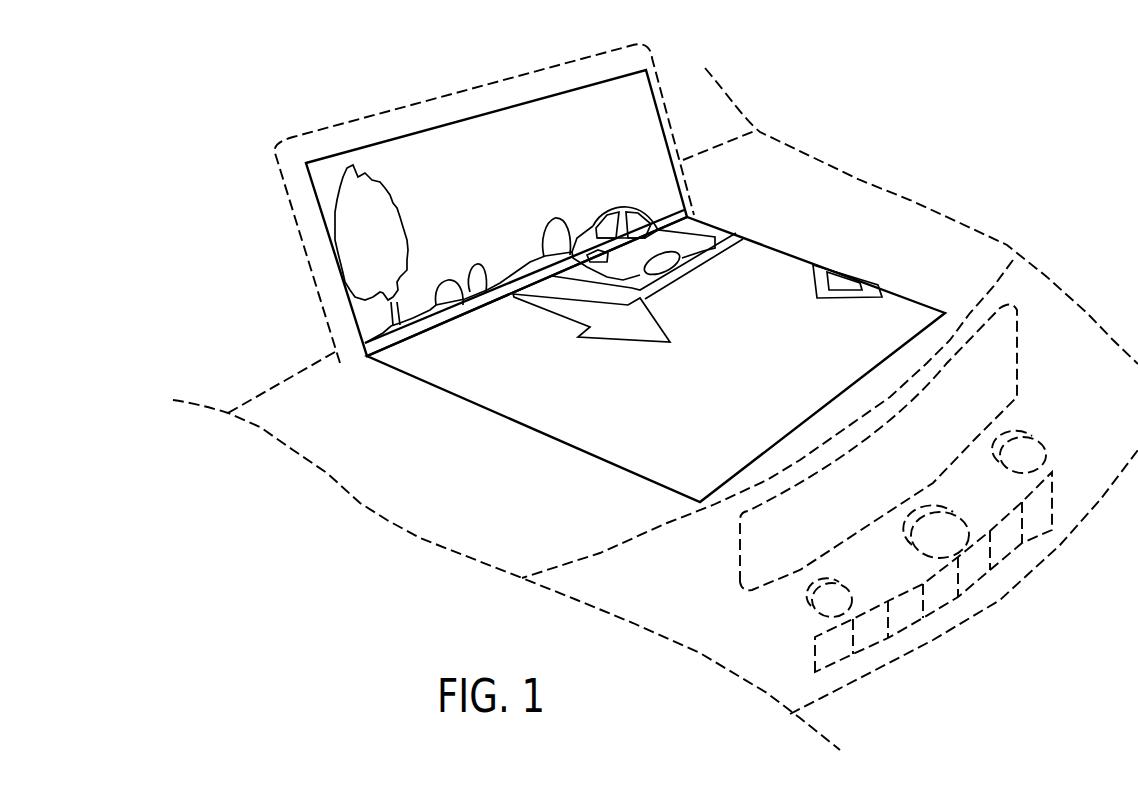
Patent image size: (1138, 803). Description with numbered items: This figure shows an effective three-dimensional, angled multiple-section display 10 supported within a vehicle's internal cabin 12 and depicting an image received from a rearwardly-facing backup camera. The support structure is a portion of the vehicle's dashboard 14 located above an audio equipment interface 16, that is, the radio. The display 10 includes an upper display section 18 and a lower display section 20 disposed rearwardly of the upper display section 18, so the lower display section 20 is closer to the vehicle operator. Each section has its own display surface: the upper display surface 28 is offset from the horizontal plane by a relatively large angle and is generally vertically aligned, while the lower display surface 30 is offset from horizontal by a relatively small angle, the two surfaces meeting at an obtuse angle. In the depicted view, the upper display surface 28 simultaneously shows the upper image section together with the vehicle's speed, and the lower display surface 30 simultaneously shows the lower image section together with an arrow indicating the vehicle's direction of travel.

The display 10 is at (655, 385).
The internal cabin 12 is at (1030, 208).
The dashboard 14 is at (893, 184).
The audio equipment interface 16 is at (1075, 481).
The upper display section 18 is at (450, 213).
The lower display section 20 is at (656, 356).
The upper display surface 28 is at (613, 161).
The lower display surface 30 is at (800, 364).